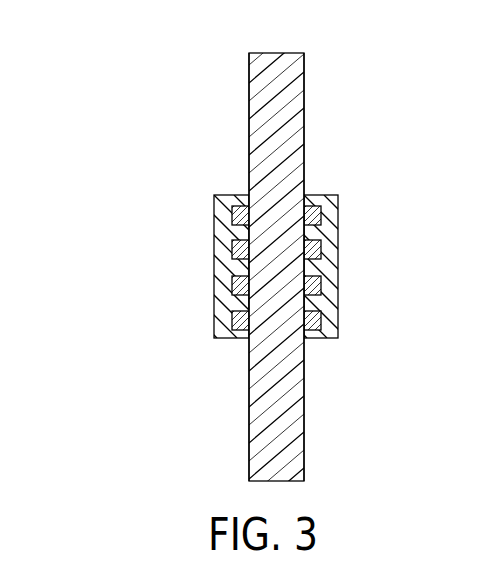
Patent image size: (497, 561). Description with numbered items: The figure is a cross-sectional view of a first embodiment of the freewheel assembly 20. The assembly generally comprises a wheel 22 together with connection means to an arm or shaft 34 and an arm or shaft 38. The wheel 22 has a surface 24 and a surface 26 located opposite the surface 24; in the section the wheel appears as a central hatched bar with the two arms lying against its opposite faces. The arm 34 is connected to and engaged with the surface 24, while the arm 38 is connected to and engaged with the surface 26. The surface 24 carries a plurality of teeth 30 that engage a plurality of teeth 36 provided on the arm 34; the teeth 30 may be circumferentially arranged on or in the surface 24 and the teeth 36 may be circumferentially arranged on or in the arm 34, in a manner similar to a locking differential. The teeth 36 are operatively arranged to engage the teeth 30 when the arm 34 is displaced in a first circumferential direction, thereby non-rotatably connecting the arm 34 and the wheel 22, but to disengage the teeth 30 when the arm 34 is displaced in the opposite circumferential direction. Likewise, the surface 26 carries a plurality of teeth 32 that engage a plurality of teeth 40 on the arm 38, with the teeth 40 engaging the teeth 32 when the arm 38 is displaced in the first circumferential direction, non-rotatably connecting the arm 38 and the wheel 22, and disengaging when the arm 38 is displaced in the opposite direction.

The freewheel assembly 20 is at (92, 111).
The wheel 22 is at (290, 88).
The surface 24 is at (248, 127).
The surface 26 is at (305, 143).
The teeth 30 is at (238, 214).
The teeth 32 is at (317, 213).
The arm 34 is at (222, 263).
The teeth 36 is at (238, 302).
The arm 38 is at (330, 258).
The teeth 40 is at (317, 295).